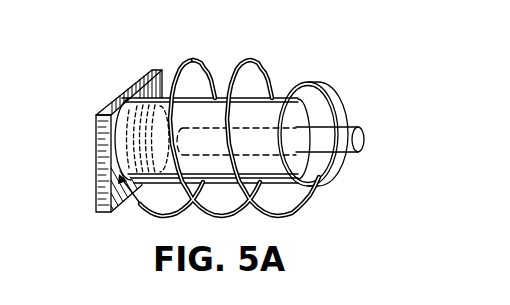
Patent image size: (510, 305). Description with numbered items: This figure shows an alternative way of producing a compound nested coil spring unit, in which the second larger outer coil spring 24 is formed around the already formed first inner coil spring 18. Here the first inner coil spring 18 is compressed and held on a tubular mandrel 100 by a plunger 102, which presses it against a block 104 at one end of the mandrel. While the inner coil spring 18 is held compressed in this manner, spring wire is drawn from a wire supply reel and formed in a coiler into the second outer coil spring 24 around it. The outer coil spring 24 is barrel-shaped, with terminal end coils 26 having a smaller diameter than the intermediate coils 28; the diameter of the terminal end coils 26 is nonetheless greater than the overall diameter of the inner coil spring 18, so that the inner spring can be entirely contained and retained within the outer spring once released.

The first inner coil spring 18 is at (119, 153).
The second outer coil spring 24 is at (218, 117).
The terminal end coils 26 is at (341, 89).
The intermediate coils 28 is at (232, 72).
The tubular mandrel 100 is at (299, 97).
The plunger 102 is at (366, 135).
The block 104 is at (98, 138).